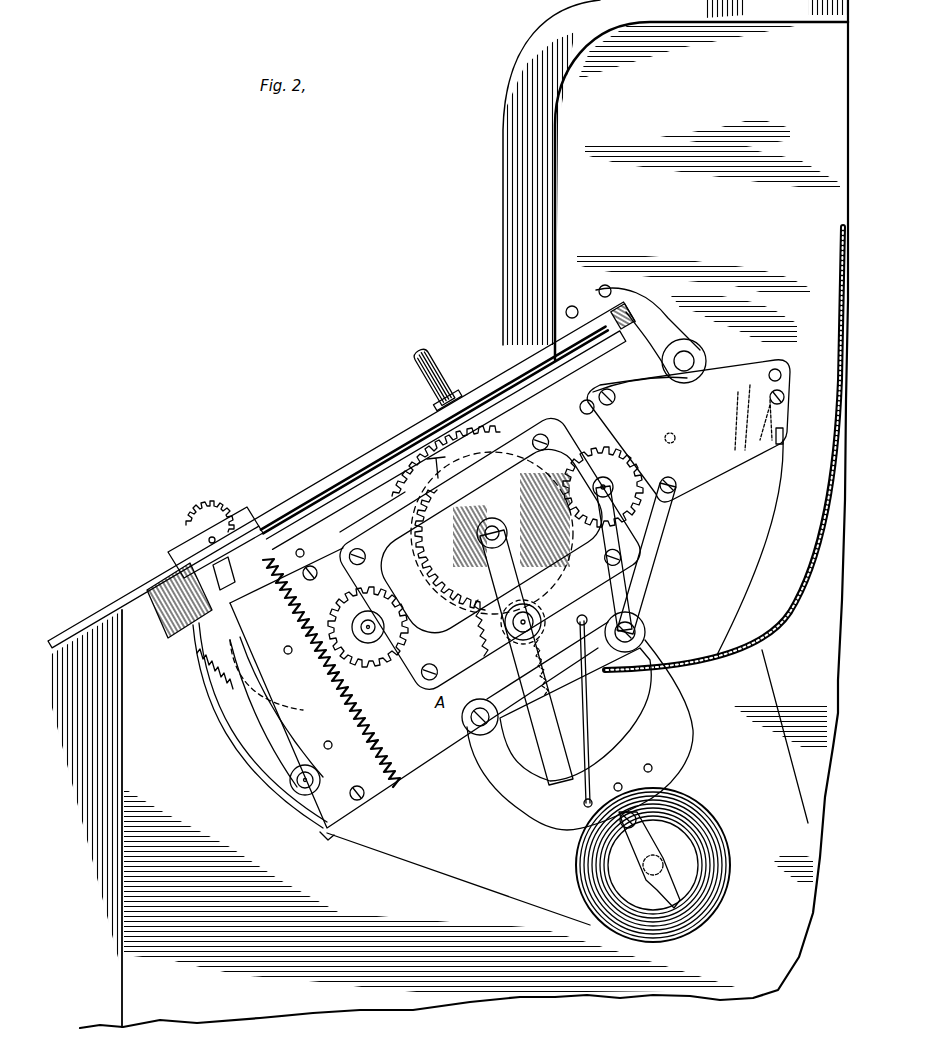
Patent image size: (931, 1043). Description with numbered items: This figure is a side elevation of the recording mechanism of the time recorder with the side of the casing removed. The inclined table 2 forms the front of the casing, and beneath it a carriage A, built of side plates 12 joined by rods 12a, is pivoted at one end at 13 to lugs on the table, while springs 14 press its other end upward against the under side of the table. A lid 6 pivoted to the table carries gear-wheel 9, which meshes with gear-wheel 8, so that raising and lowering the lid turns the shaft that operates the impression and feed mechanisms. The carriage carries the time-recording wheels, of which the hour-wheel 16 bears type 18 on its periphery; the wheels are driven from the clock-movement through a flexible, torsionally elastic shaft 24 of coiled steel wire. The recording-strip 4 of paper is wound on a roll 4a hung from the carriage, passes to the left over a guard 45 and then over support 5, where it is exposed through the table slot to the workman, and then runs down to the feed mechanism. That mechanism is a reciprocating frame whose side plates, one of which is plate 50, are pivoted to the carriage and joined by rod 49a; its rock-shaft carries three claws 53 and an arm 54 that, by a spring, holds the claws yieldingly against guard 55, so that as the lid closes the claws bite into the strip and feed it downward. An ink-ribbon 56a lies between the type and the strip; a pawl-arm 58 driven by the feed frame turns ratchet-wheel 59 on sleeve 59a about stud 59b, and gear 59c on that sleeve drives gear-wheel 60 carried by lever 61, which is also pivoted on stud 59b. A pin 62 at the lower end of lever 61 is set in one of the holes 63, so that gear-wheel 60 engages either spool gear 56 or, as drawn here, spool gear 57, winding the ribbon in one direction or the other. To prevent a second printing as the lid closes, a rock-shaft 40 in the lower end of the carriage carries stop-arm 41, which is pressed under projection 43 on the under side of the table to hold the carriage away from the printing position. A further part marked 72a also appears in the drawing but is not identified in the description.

The table 2 is at (483, 392).
The recording-strip 4 is at (440, 872).
The roll 4a is at (725, 848).
The support 5 is at (372, 512).
The lid 6 is at (337, 466).
The gear-wheel 8 is at (217, 675).
The gear-wheel 9 is at (200, 503).
The side plates 12 is at (700, 582).
The rods 12a is at (313, 580).
The pivot 13 is at (692, 358).
The springs 14 is at (372, 698).
The hour-wheel 16 is at (500, 431).
The type 18 is at (390, 488).
The flexible shaft 24 is at (812, 548).
The rock-shaft 40 is at (312, 788).
The stop-arm 41 is at (276, 712).
The projection 43 is at (170, 638).
The guard 45 is at (257, 778).
The rod 49a is at (782, 372).
The side plate 50 is at (688, 431).
The claws 53 is at (770, 445).
The arm 54 is at (784, 440).
The guard 55 is at (748, 426).
The gear-wheel 56 is at (368, 640).
The ink-ribbon 56a is at (580, 406).
The gear-wheel 57 is at (663, 511).
The pawl-arm 58 is at (650, 574).
The ratchet-wheel 59 is at (543, 588).
The sleeve 59a is at (510, 663).
The stud 59b is at (487, 619).
The gear 59c is at (586, 616).
The gear-wheel 60 is at (492, 533).
The lever 61 is at (525, 651).
The pin 62 is at (586, 798).
The holes 63 is at (653, 768).
The gear 72a is at (716, 563).